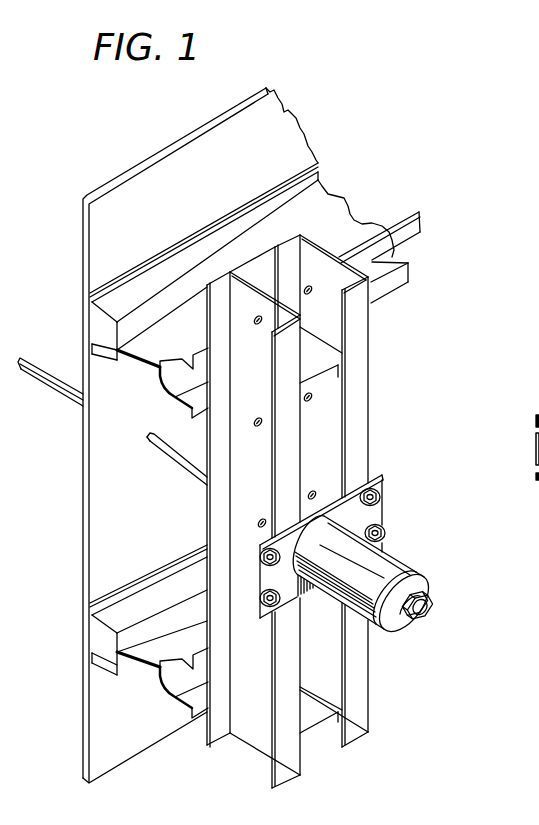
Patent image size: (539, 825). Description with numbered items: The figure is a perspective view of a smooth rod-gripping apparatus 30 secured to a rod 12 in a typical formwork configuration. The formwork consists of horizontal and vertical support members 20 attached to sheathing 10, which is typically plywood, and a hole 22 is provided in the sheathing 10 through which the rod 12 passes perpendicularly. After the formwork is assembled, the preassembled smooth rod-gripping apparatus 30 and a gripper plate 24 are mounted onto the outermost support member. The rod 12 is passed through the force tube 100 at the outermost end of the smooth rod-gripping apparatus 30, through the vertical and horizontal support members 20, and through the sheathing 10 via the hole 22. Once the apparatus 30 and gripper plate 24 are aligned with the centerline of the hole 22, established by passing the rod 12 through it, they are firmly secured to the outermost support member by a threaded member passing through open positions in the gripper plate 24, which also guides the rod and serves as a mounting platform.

The sheathing 10 is at (97, 537).
The rod 12 is at (52, 390).
The hole 22 is at (147, 447).
The support members 20 is at (394, 652).
The gripper plate 24 is at (394, 478).
The smooth rod-gripping apparatus 30 is at (410, 539).
The force tube 100 is at (444, 588).